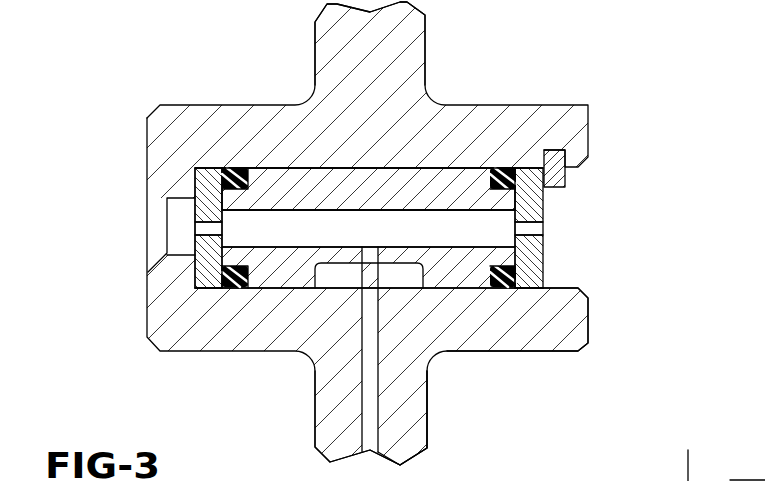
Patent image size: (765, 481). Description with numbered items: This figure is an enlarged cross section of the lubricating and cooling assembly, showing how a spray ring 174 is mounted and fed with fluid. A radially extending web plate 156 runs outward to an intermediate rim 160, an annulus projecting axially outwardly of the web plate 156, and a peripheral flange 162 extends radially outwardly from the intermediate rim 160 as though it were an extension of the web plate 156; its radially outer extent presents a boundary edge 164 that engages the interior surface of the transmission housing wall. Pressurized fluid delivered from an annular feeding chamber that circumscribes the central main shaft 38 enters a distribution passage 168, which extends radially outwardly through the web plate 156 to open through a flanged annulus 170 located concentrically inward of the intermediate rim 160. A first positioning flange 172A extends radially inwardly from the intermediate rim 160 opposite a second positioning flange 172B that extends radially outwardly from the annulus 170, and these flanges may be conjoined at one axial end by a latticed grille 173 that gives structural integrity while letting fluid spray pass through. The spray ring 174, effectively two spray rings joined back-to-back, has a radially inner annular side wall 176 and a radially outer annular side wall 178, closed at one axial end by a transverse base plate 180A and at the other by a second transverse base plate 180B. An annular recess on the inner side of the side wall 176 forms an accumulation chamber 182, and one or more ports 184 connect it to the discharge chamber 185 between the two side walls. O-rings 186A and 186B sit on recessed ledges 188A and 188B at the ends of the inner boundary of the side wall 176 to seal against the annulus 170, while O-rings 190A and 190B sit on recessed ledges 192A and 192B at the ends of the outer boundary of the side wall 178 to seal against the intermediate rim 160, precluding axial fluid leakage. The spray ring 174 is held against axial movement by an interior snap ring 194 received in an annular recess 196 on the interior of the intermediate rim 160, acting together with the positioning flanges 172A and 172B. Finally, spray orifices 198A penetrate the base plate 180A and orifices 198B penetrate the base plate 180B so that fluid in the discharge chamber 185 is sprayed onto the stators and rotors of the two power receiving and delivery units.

The web plate 156 is at (402, 427).
The intermediate rim 160 is at (500, 117).
The peripheral flange 162 is at (333, 30).
The boundary edge 164 is at (747, 469).
The distribution passage 168 is at (370, 415).
The flanged annulus 170 is at (495, 328).
The first positioning flange 172A is at (173, 185).
The second positioning flange 172B is at (175, 270).
The latticed grille 173 is at (148, 234).
The spray ring 174 is at (287, 162).
The radially inner annular side wall 176 is at (448, 278).
The radially outer annular side wall 178 is at (448, 178).
The transverse base plate 180A is at (203, 278).
The second transverse base plate 180B is at (540, 267).
The accumulation chamber 182 is at (333, 274).
The port 184 is at (370, 258).
The discharge chamber 185 is at (442, 240).
The O-ring 186A is at (233, 288).
The O-ring 186B is at (505, 289).
The recessed ledge 188A is at (220, 288).
The recessed ledge 188B is at (518, 278).
The O-ring 190A is at (241, 166).
The O-ring 190B is at (502, 168).
The recessed ledge 192A is at (228, 168).
The recessed ledge 192B is at (512, 170).
The interior snap ring 194 is at (560, 175).
The annular recess 196 is at (557, 150).
The spray orifice 198A is at (208, 232).
The orifice 198B is at (533, 230).
The central main shaft 38 is at (689, 452).